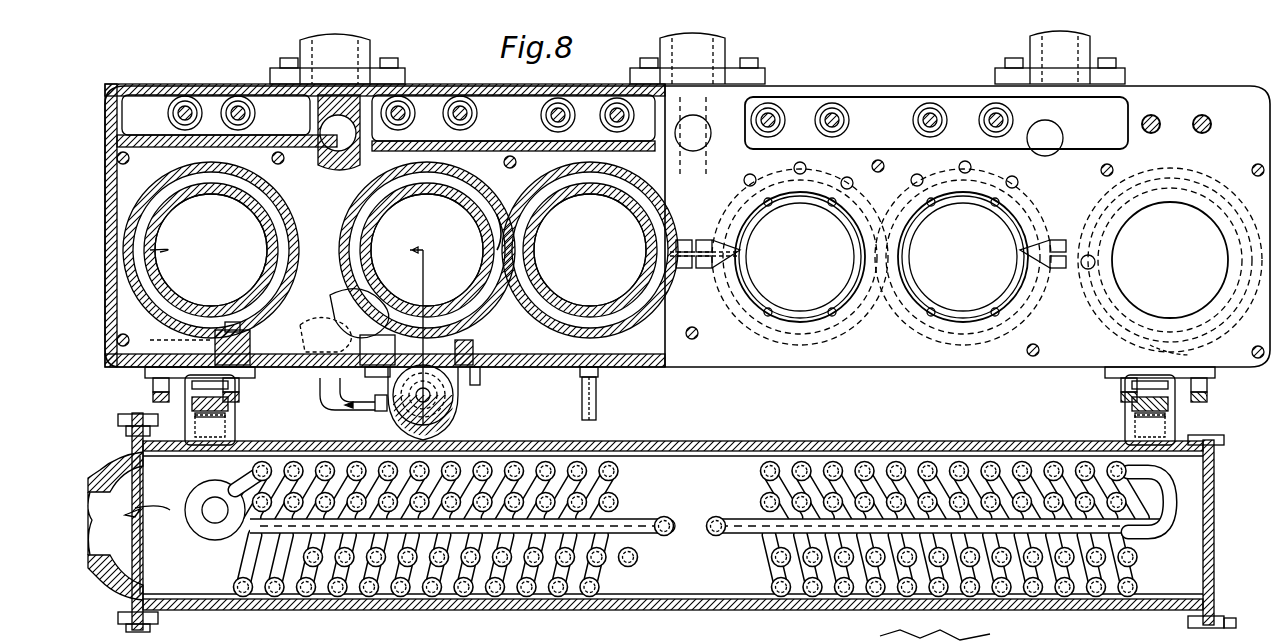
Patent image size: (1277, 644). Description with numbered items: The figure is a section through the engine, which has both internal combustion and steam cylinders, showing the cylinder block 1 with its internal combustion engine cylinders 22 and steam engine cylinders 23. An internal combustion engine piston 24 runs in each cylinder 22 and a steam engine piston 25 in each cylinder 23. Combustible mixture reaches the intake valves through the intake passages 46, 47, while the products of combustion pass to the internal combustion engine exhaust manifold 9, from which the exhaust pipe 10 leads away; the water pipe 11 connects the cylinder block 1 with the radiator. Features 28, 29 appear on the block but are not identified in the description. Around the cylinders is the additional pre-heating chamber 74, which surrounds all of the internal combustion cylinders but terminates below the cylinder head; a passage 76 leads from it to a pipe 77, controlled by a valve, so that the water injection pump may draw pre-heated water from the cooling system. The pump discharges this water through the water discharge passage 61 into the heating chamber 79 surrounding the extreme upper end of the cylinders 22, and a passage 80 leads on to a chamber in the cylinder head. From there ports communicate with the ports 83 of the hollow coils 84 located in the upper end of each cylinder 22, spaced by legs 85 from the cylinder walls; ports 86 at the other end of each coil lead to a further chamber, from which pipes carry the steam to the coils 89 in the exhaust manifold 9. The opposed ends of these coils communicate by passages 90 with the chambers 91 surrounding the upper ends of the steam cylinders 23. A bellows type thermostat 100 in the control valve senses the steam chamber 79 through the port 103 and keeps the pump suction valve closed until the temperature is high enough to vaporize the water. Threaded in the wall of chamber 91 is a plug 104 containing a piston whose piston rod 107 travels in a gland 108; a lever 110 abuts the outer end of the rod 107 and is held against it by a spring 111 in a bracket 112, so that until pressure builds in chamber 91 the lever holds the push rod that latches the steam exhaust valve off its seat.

The cylinder block 1 is at (800, 90).
The internal combustion engine exhaust manifold 9 is at (665, 610).
The exhaust pipe 10 is at (110, 478).
The water pipe 11 is at (452, 432).
The internal combustion engine cylinder 22 is at (570, 210).
The steam engine cylinder 23 is at (158, 250).
The internal combustion engine piston 24 is at (695, 253).
The steam engine piston 25 is at (692, 257).
The bolt hole boss 28 is at (240, 100).
The bolt 29 is at (167, 113).
The intake passage 46 is at (1068, 160).
The intake passage 47 is at (693, 151).
The water discharge passage 61 is at (598, 390).
The additional pre-heating chamber 74 is at (345, 300).
The passage 76 is at (312, 322).
The pipe 77 is at (333, 400).
The heating chamber 79 is at (628, 195).
The passage 80 is at (797, 166).
The port 83 is at (684, 240).
The hollow coil 84 is at (845, 218).
The leg 85 is at (832, 206).
The port 86 is at (684, 268).
The coil 89 is at (345, 596).
The passage 90 is at (205, 343).
The chamber 91 is at (175, 318).
The bellows type thermostat 100 is at (968, 634).
The port 103 is at (455, 392).
The plug 104 is at (250, 342).
The piston rod 107 is at (252, 394).
The gland 108 is at (255, 378).
The lever 110 is at (215, 405).
The spring 111 is at (250, 412).
The bracket 112 is at (255, 428).